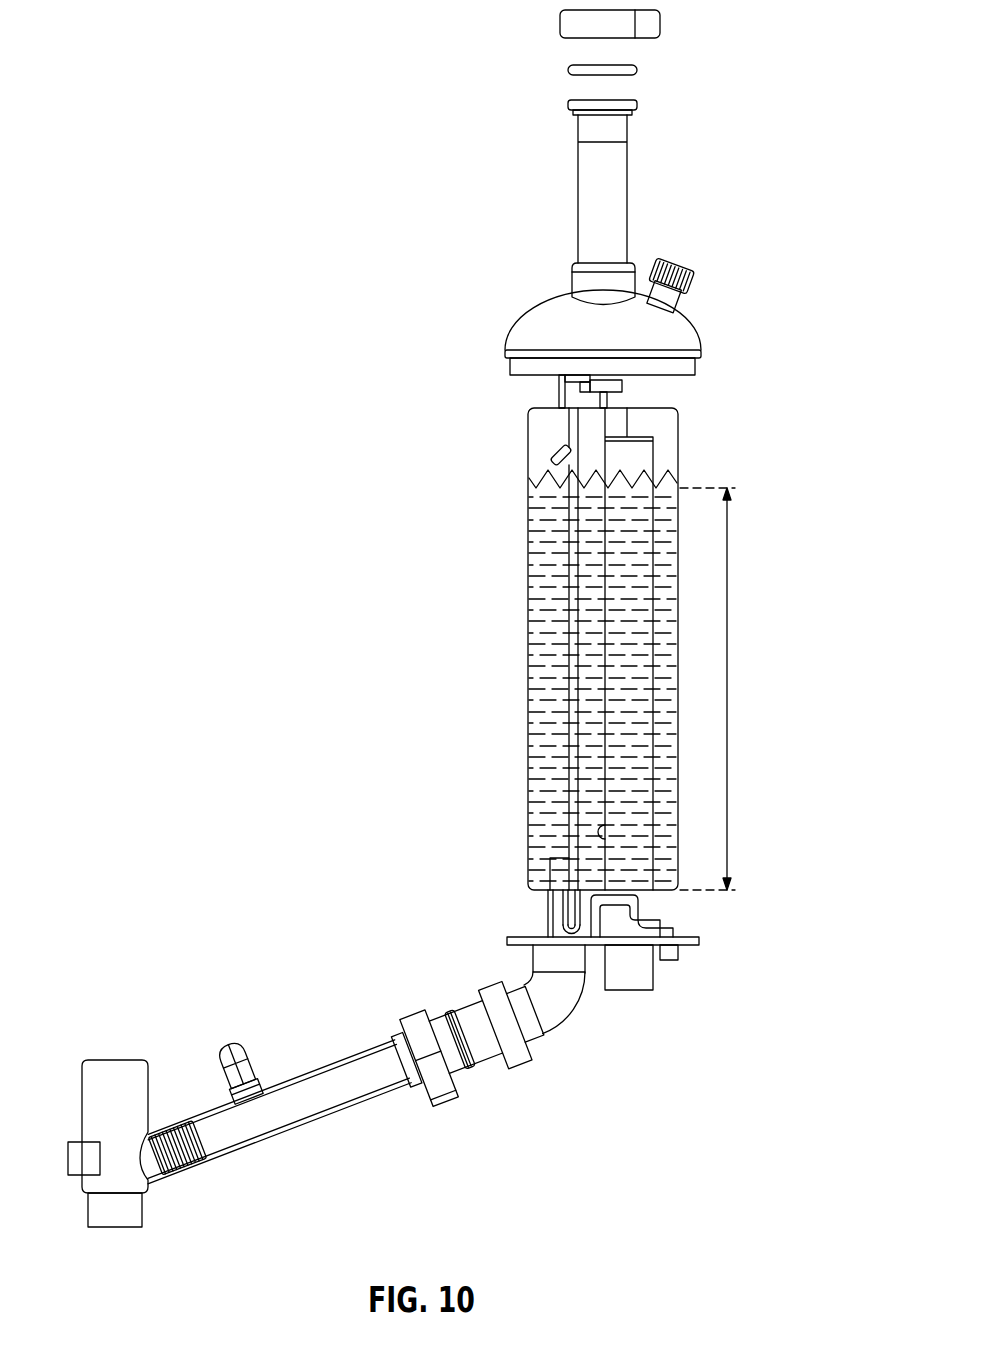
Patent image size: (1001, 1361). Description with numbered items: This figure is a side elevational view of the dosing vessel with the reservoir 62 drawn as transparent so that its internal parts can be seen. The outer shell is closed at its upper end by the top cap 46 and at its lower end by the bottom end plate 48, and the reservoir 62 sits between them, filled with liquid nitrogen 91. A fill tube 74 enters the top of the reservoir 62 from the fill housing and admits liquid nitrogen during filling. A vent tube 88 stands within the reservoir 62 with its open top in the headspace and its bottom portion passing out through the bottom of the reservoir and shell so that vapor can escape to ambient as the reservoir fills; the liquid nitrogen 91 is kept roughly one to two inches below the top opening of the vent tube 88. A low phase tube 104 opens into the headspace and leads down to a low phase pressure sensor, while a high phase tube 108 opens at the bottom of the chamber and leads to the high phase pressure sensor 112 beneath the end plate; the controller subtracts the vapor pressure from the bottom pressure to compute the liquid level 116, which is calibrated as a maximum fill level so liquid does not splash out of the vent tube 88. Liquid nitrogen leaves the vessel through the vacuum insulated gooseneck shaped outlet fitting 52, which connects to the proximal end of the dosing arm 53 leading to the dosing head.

The top cap 46 is at (693, 316).
The bottom end plate 48 is at (687, 949).
The outlet fitting 52 is at (577, 1008).
The dosing arm 53 is at (290, 1133).
The reservoir 62 is at (528, 733).
The fill tube 74 is at (553, 460).
The vent tube 88 is at (650, 900).
The liquid nitrogen 91 is at (533, 481).
The low phase tube 104 is at (570, 603).
The high phase tube 108 is at (546, 910).
The high phase pressure sensor 112 is at (668, 962).
The liquid level 116 is at (729, 689).